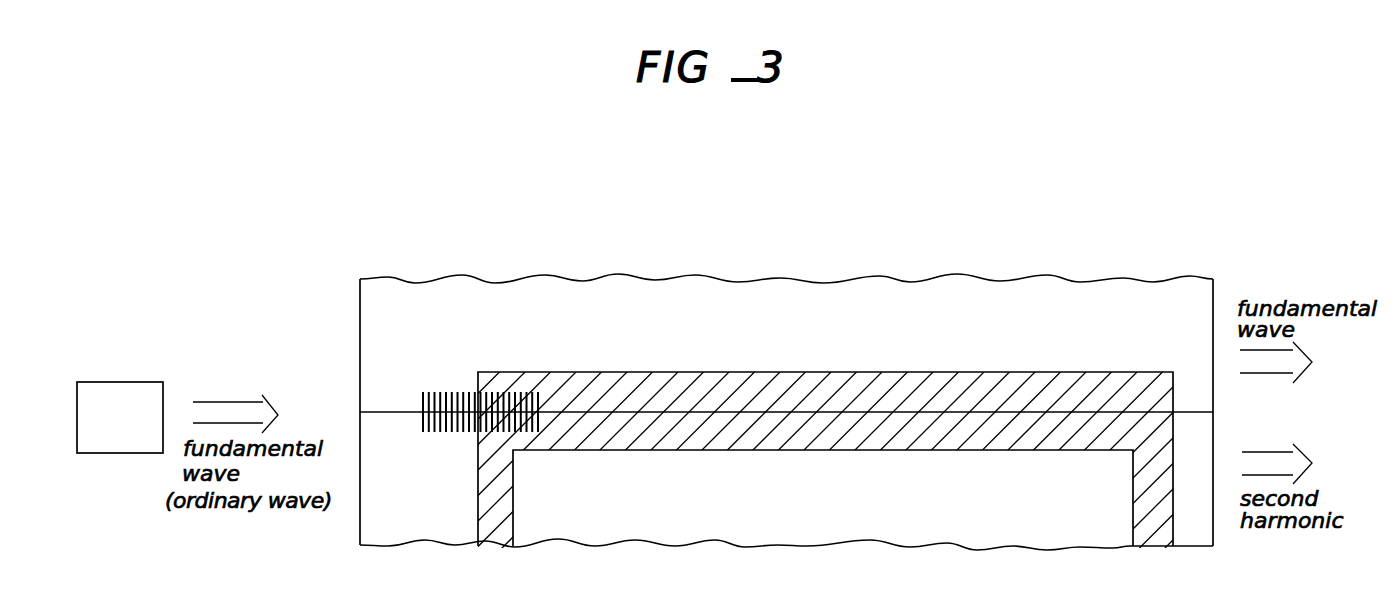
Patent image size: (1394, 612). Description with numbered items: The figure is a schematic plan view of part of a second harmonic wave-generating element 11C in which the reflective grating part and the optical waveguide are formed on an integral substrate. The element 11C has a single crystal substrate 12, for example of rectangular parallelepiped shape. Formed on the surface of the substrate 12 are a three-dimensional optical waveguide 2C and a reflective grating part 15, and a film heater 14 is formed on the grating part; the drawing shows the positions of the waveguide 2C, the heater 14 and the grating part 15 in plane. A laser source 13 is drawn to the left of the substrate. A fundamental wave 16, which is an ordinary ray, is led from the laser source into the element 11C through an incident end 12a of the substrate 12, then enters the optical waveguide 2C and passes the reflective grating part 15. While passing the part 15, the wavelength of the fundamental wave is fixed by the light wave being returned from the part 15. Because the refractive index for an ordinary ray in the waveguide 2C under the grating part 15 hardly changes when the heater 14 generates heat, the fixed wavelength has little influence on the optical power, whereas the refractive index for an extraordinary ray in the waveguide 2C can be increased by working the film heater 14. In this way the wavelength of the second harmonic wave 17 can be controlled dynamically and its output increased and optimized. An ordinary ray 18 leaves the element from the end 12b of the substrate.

The second harmonic wave-generating element 11C is at (1115, 260).
The single crystal substrate 12 is at (1025, 275).
The incident end 12a is at (360, 333).
The end of the substrate 12b is at (1213, 293).
The laser source 13 is at (112, 380).
The film heater 14 is at (833, 387).
The reflective grating part 15 is at (543, 457).
The fundamental wave 16 is at (217, 402).
The second harmonic wave 17 is at (1277, 377).
The ordinary ray 18 is at (1273, 452).
The three-dimensional optical waveguide 2C is at (747, 412).